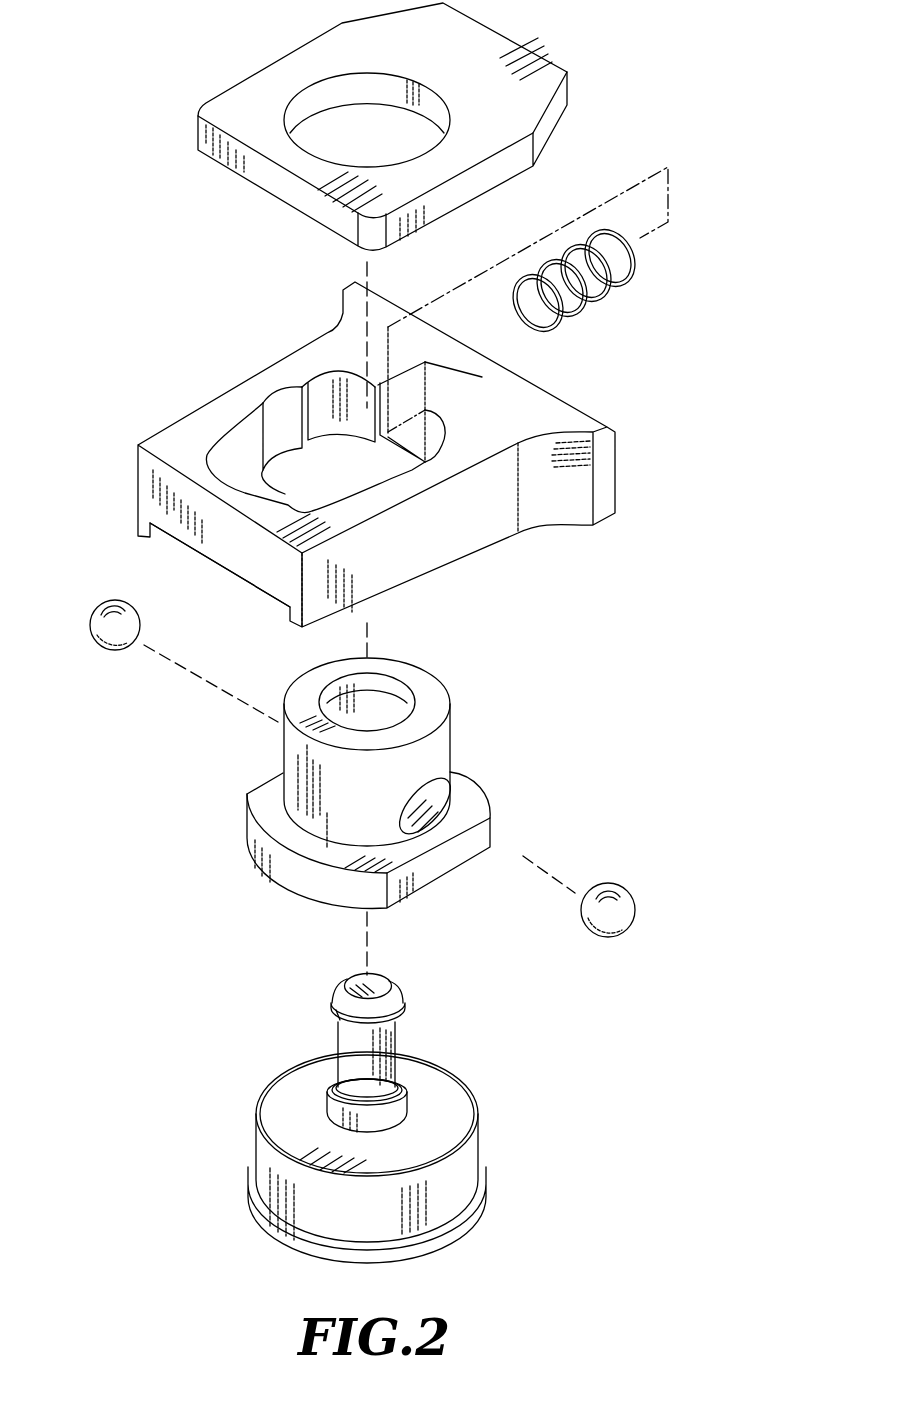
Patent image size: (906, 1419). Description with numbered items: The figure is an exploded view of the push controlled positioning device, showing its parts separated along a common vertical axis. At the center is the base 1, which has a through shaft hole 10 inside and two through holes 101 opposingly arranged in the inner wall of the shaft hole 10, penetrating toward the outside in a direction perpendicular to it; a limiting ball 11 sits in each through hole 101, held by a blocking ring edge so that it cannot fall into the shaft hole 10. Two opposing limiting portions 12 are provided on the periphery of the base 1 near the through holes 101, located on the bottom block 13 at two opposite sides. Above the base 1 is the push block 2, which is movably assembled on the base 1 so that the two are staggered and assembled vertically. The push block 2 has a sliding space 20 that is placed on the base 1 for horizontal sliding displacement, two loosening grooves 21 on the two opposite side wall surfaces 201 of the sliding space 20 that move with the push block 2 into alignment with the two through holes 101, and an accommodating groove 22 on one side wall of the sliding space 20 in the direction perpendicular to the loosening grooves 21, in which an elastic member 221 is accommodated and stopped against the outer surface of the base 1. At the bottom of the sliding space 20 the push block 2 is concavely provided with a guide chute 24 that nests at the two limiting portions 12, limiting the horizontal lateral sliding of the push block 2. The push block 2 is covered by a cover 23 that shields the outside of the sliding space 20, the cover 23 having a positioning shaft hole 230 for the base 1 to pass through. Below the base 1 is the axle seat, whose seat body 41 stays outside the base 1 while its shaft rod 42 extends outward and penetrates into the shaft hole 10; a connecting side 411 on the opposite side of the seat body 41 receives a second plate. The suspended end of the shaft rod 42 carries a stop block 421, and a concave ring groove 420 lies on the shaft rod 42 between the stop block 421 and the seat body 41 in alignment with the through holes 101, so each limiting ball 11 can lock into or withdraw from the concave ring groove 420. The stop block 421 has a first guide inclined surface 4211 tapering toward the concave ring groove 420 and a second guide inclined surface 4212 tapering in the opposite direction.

The base 1 is at (353, 805).
The shaft hole 10 is at (390, 712).
The through holes 101 is at (435, 783).
The limiting ball 11 is at (123, 637).
The limiting portions 12 is at (423, 863).
The bottom block 13 is at (265, 808).
The push block 2 is at (362, 461).
The sliding space 20 is at (258, 478).
The side wall surfaces 201 is at (238, 432).
The loosening grooves 21 is at (287, 402).
The accommodating groove 22 is at (440, 393).
The elastic member 221 is at (637, 263).
The cover 23 is at (378, 125).
The positioning shaft hole 230 is at (338, 133).
The guide chute 24 is at (157, 537).
The seat body 41 is at (337, 1180).
The connecting side 411 is at (318, 1237).
The shaft rod 42 is at (351, 1023).
The concave ring groove 420 is at (330, 1082).
The stop block 421 is at (353, 994).
The first guide inclined surface 4211 is at (283, 1003).
The second guide inclined surface 4212 is at (342, 995).